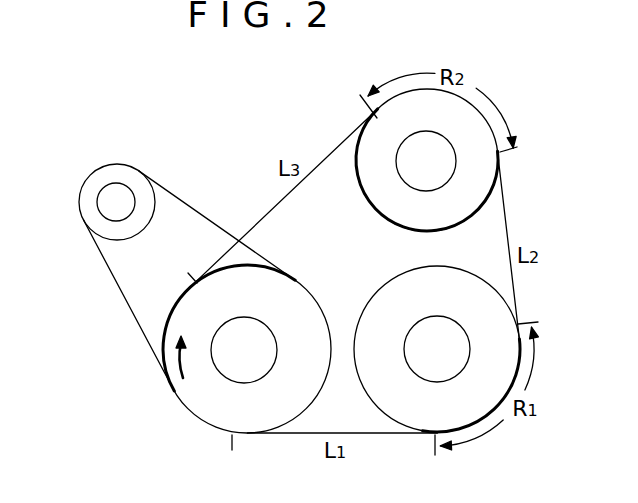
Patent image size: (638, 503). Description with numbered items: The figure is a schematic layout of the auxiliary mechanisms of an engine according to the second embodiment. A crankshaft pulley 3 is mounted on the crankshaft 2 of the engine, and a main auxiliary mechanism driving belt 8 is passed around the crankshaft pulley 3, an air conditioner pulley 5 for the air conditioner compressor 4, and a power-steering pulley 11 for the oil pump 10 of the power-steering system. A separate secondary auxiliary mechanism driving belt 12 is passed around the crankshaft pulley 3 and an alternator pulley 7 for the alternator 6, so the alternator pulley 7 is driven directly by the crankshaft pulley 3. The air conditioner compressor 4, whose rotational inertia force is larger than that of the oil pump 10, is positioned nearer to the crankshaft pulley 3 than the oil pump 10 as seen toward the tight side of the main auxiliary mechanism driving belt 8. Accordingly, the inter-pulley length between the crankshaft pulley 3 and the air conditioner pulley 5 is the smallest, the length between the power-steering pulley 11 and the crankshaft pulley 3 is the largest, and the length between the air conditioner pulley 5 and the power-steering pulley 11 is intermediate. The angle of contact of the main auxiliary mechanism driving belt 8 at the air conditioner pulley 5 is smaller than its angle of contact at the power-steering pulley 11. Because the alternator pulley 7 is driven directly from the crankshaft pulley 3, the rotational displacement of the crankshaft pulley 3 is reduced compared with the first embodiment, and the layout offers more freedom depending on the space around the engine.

The crankshaft 2 is at (263, 355).
The crankshaft pulley 3 is at (192, 397).
The air conditioner compressor 4 is at (445, 337).
The air conditioner pulley 5 is at (380, 317).
The alternator 6 is at (108, 199).
The alternator pulley 7 is at (132, 173).
The main auxiliary mechanism driving belt 8 is at (282, 201).
The oil pump 10 is at (417, 145).
The power-steering pulley 11 is at (480, 177).
The secondary auxiliary mechanism driving belt 12 is at (121, 294).